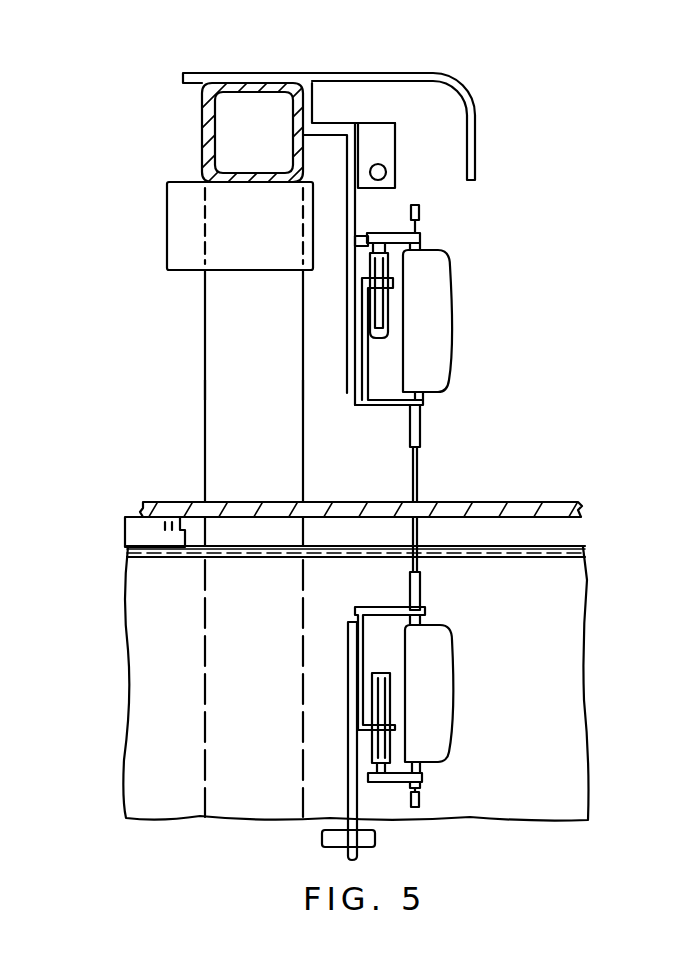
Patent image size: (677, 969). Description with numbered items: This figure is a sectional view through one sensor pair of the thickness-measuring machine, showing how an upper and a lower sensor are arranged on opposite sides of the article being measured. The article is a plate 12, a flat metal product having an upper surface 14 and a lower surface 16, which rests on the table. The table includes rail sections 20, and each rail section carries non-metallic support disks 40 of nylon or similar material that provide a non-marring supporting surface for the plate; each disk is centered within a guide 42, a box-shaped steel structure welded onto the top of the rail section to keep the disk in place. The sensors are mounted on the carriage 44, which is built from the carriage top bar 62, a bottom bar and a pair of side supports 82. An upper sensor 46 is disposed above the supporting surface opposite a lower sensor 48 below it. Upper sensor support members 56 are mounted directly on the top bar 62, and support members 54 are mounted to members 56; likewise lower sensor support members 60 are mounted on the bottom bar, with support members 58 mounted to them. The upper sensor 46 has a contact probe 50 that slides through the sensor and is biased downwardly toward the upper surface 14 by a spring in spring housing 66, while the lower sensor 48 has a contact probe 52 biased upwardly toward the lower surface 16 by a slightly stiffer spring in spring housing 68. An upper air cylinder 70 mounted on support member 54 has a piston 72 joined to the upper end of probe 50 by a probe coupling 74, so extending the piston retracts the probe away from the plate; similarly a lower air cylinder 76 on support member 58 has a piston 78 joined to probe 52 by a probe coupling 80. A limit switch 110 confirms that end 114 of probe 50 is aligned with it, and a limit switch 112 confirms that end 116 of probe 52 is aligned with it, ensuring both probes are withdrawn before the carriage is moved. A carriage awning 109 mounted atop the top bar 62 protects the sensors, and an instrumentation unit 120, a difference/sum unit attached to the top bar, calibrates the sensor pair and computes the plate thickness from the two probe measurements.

The plate 12 is at (580, 504).
The upper surface 14 is at (526, 502).
The lower surface 16 is at (515, 519).
The rail section 20 is at (561, 758).
The non-metallic support disk 40 is at (130, 522).
The guide 42 is at (127, 540).
The carriage 44 is at (204, 358).
The upper sensor 46 is at (450, 283).
The lower sensor 48 is at (452, 692).
The contact probe 50 is at (418, 484).
The contact probe 52 is at (418, 543).
The upper sensor support member 54 is at (375, 408).
The upper sensor support member 56 is at (348, 362).
The lower sensor support member 58 is at (364, 609).
The lower sensor support member 60 is at (350, 663).
The carriage top bar 62 is at (203, 129).
The spring housing 66 is at (421, 432).
The spring housing 68 is at (421, 589).
The upper air cylinder 70 is at (372, 318).
The piston 72 is at (355, 244).
The probe coupling 74 is at (400, 234).
The lower air cylinder 76 is at (374, 700).
The piston 78 is at (376, 770).
The probe coupling 80 is at (401, 783).
The side support 82 is at (264, 401).
The carriage awning 109 is at (470, 104).
The limit switch 110 is at (386, 170).
The limit switch 112 is at (322, 838).
The end of probe 114 is at (420, 215).
The end of probe 116 is at (421, 801).
The instrumentation unit 120 is at (167, 222).